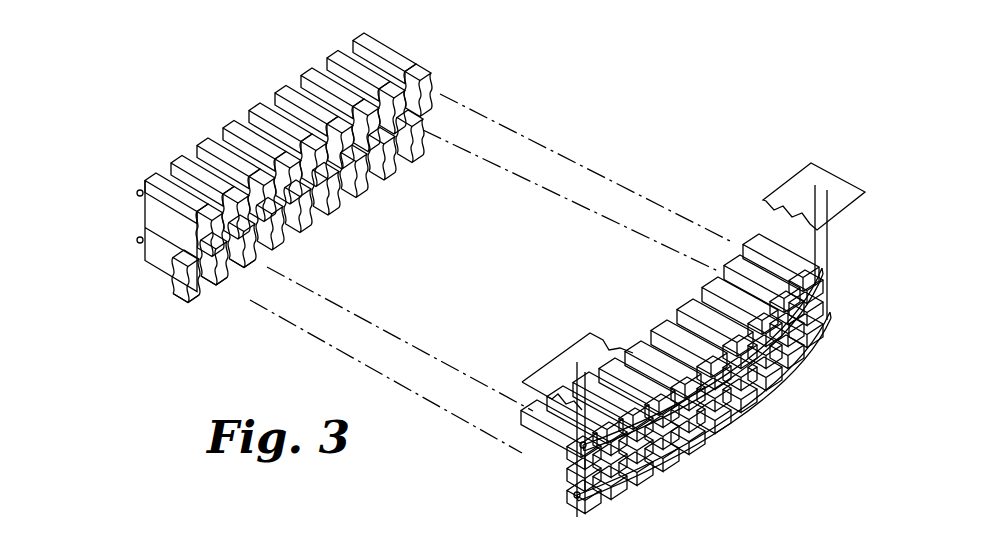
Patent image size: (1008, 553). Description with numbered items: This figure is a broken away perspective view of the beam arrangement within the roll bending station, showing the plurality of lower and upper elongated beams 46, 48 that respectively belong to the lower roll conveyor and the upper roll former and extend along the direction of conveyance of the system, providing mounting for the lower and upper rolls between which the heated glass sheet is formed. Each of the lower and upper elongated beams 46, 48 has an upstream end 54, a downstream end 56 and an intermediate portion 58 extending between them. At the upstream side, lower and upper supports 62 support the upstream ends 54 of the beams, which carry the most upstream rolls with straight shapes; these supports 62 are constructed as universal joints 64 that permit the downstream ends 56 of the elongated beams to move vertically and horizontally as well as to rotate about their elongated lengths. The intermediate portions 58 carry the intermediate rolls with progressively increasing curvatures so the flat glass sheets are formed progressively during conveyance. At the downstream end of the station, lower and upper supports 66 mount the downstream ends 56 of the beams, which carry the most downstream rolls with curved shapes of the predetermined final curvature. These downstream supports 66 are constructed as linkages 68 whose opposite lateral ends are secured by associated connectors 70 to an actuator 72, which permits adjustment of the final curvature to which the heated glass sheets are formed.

The lower elongated beams 46 is at (258, 258).
The upper elongated beams 48 is at (230, 175).
The upstream ends 54 is at (149, 186).
The downstream ends 56 is at (600, 425).
The intermediate portions 58 is at (580, 203).
The lower and upper supports 62 is at (132, 192).
The universal joints 64 is at (137, 192).
The lower and upper supports 66 is at (575, 497).
The linkages 68 is at (710, 362).
The connectors 70 is at (832, 251).
The actuator 72 is at (838, 192).